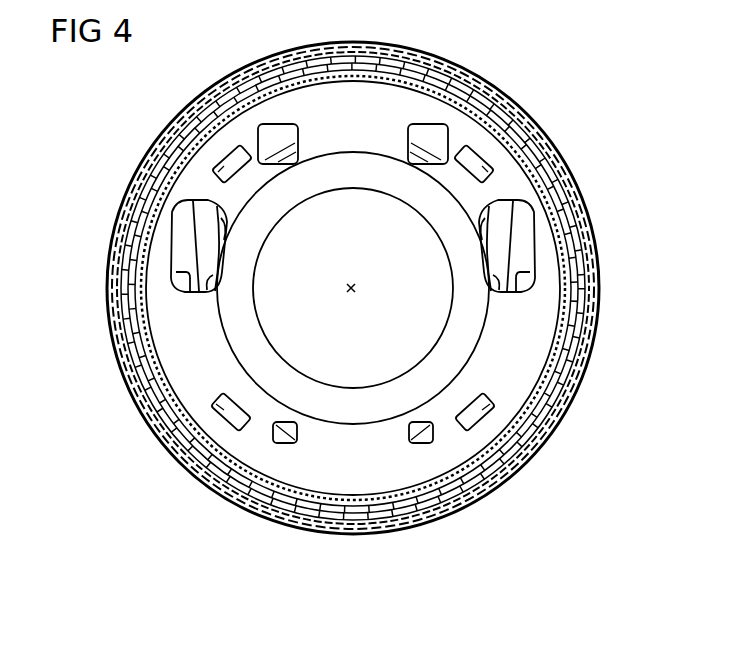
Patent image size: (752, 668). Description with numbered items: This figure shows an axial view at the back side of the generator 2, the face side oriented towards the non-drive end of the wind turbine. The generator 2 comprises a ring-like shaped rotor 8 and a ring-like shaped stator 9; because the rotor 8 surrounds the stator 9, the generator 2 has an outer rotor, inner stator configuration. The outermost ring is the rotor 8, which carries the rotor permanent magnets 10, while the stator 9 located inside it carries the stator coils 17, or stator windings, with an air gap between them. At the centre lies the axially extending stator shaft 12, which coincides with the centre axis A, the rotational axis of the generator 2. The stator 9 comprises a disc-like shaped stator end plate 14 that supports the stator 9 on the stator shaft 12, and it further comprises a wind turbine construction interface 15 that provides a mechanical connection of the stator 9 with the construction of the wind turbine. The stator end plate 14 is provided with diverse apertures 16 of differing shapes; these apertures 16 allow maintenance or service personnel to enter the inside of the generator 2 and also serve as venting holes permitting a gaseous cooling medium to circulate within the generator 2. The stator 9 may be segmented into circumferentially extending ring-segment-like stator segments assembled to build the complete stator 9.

The generator 2 is at (585, 91).
The rotor 8 is at (582, 184).
The stator coils 17 is at (150, 152).
The rotor permanent magnets 10 is at (140, 347).
The stator 9 is at (512, 442).
The stator end plates 14 is at (548, 287).
The wind turbine construction interface 15 is at (468, 338).
The stator shaft 12 is at (336, 386).
The centre axis A is at (356, 289).
The apertures 16 is at (223, 174).